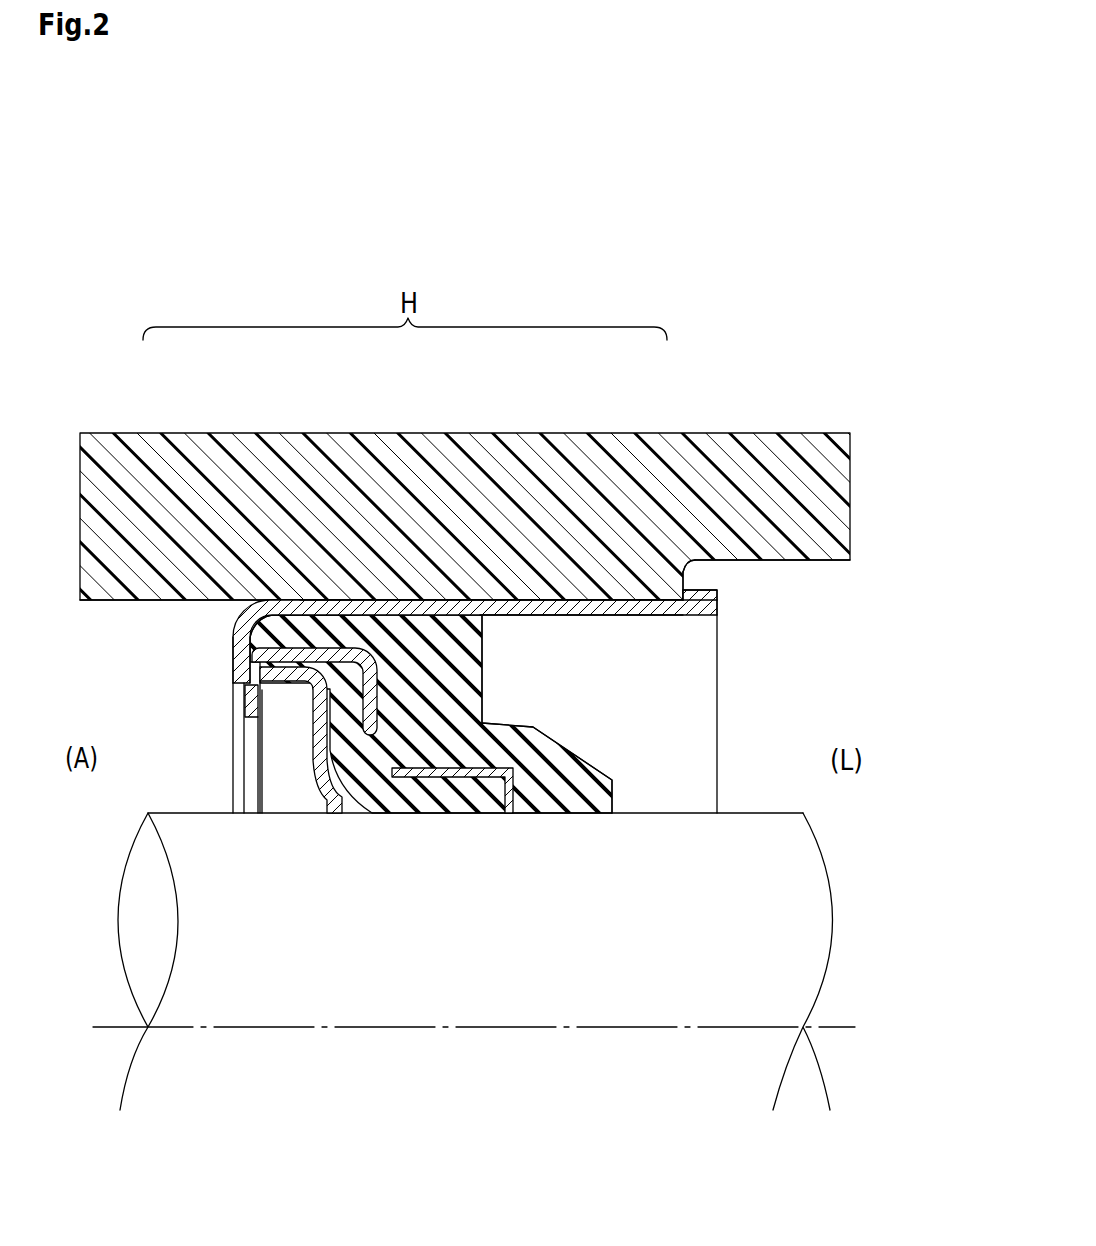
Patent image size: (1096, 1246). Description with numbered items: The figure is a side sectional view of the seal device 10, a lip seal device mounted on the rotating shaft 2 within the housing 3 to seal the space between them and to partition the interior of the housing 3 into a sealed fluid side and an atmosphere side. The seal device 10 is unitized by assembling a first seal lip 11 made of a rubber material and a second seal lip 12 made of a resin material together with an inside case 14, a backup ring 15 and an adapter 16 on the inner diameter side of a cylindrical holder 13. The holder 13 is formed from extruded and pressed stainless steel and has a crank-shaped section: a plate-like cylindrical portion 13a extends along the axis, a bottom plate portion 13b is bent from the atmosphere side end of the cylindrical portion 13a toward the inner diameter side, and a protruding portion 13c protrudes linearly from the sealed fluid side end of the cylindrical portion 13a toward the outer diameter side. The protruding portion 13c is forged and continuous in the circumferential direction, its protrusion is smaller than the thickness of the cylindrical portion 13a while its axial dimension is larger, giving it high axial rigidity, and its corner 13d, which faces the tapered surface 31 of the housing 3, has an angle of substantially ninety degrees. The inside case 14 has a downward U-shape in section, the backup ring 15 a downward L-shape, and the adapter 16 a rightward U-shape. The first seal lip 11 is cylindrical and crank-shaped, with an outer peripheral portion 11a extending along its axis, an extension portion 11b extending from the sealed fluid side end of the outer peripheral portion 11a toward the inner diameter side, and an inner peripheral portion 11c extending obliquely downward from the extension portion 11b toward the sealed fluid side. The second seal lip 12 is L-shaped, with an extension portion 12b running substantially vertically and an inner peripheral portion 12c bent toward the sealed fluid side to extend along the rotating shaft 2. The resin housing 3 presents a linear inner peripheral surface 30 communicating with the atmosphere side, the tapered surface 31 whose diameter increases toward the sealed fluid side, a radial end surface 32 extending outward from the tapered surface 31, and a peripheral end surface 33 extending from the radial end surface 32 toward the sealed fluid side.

The rotating shaft 2 is at (757, 847).
The housing 3 is at (320, 478).
The seal device 10 is at (882, 672).
The first seal lip 11 is at (524, 722).
The outer peripheral portion 11a is at (240, 634).
The extension portion 11b is at (402, 663).
The inner peripheral portion 11c is at (537, 750).
The second seal lip 12 is at (353, 810).
The extension portion 12b is at (345, 707).
The inner peripheral portion 12c is at (451, 778).
The holder 13 is at (724, 712).
The cylindrical portion 13a is at (627, 613).
The bottom plate portion 13b is at (237, 661).
The protruding portion 13c is at (702, 596).
The corner 13d is at (688, 582).
The inside case 14 is at (236, 708).
The backup ring 15 is at (304, 748).
The adapter 16 is at (432, 600).
The inner peripheral surface 30 is at (198, 598).
The tapered surface 31 is at (686, 598).
The radial end surface 32 is at (692, 566).
The peripheral end surface 33 is at (758, 562).